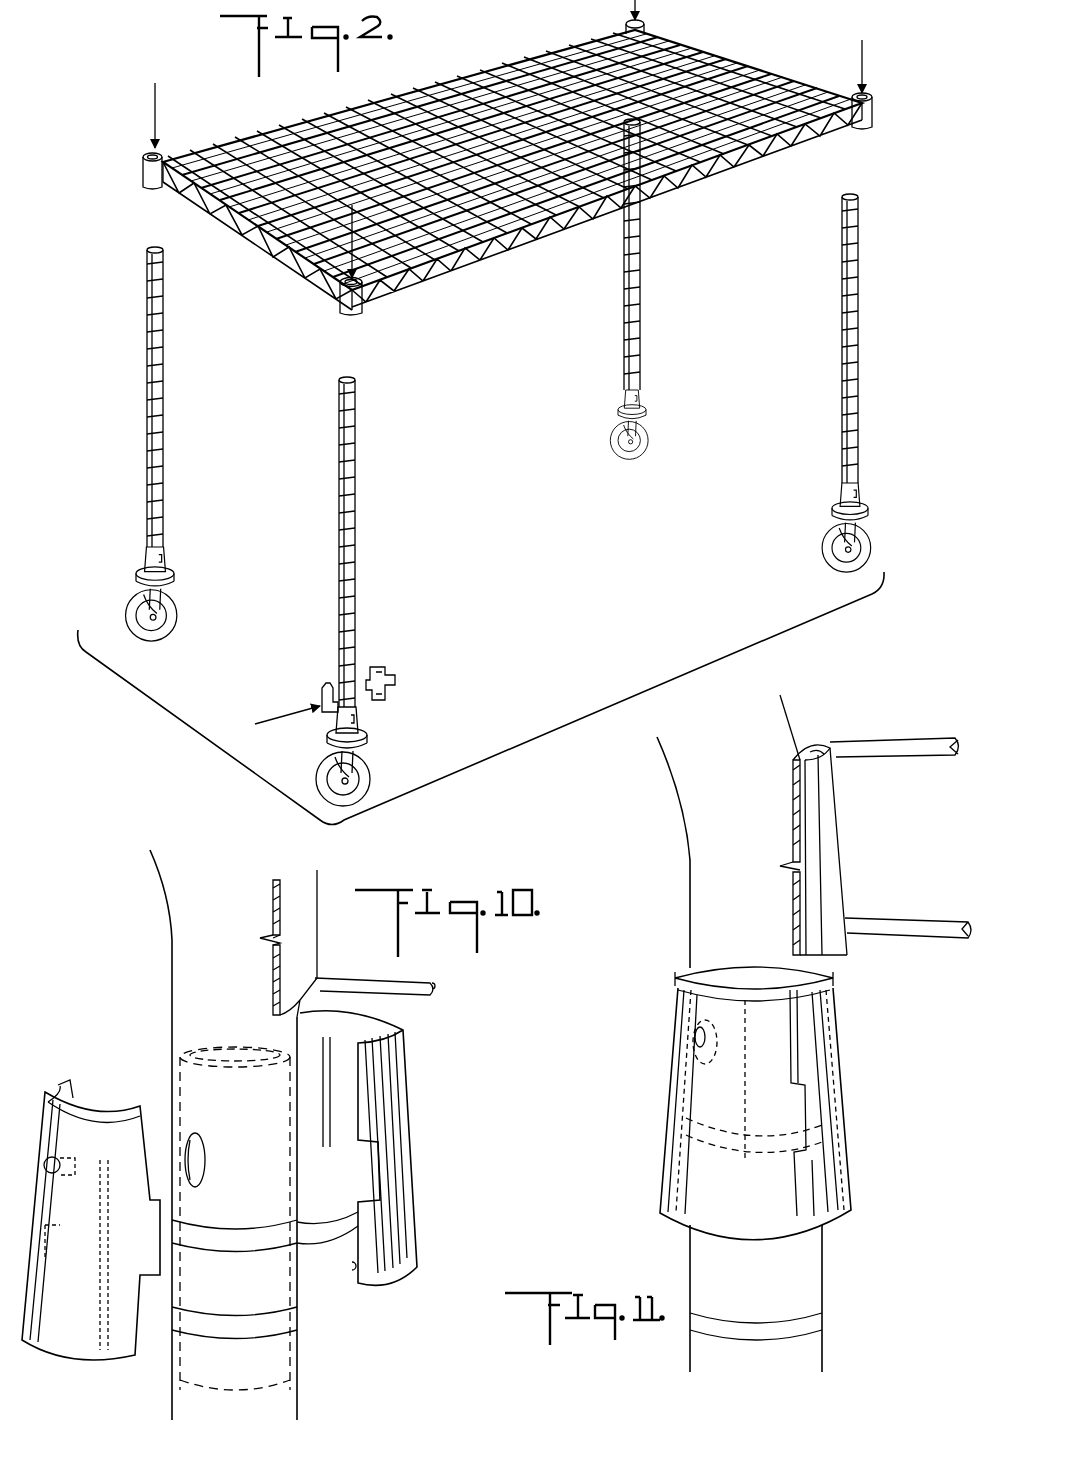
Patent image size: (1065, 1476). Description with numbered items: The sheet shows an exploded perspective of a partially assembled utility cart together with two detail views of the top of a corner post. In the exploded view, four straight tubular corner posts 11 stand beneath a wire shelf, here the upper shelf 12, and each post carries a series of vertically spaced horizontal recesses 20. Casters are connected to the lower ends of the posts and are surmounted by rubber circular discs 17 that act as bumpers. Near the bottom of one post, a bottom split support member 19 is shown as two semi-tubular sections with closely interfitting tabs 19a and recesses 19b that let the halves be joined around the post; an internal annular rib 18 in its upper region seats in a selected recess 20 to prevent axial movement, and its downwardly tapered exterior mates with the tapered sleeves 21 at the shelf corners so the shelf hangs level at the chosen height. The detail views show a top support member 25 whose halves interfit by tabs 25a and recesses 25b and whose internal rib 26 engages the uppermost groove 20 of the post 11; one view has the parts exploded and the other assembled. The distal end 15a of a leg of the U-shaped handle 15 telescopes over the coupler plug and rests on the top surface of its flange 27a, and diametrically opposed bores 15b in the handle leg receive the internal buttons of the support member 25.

In FIG. 2, the corner post 11 is at (845, 306).
In FIG. 11, the upper shelf 12 is at (932, 1013).
In FIG. 2, the handle 15 is at (512, 170).
In FIG. 10, the handle 15 is at (150, 875).
In FIG. 11, the handle 15 is at (690, 797).
In FIG. 10, the distal ends of the handle legs 15a is at (172, 1000).
In FIG. 11, the distal ends of the handle legs 15a is at (700, 954).
In FIG. 10, the bores 15b is at (207, 1170).
In FIG. 11, the bores 15b is at (690, 1012).
In FIG. 2, the circular discs 17 is at (826, 506).
In FIG. 2, the annular rib 18 is at (399, 680).
In FIG. 2, the bottom split support member 19 is at (646, 388).
In FIG. 2, the tabs 19a is at (364, 668).
In FIG. 2, the recesses 19b is at (398, 688).
In FIG. 2, the horizontal recesses 20 is at (642, 276).
In FIG. 10, the horizontal recesses 20 is at (292, 1310).
In FIG. 2, the sleeves 21 is at (875, 118).
In FIG. 10, the top support member 25 is at (418, 1083).
In FIG. 11, the top support member 25 is at (866, 1106).
In FIG. 10, the tabs 25a is at (135, 1090).
In FIG. 10, the recesses 25b is at (382, 1152).
In FIG. 10, the rib 26 is at (313, 1208).
In FIG. 10, the flange 27a is at (230, 1238).
In FIG. 11, the flange 27a is at (722, 1140).